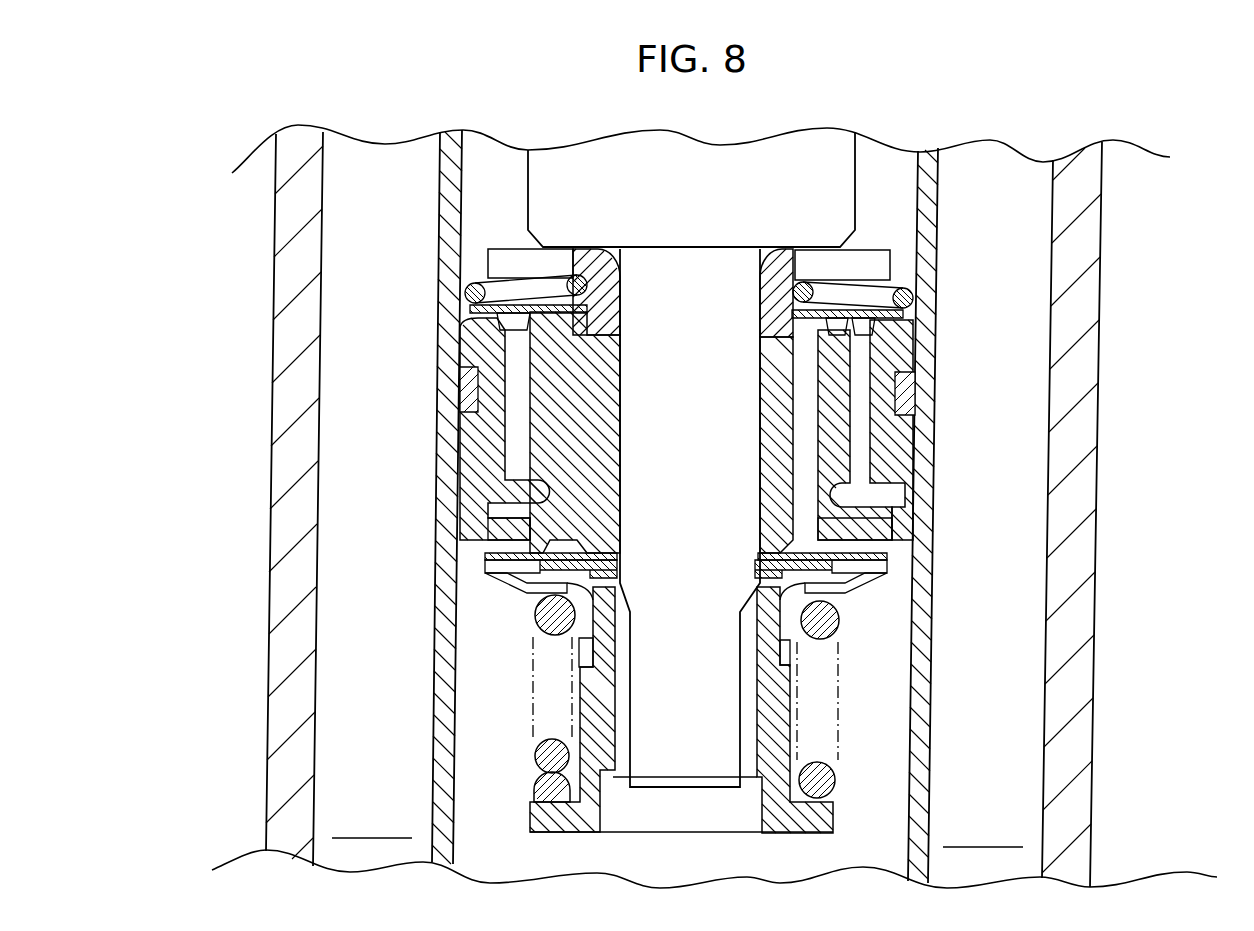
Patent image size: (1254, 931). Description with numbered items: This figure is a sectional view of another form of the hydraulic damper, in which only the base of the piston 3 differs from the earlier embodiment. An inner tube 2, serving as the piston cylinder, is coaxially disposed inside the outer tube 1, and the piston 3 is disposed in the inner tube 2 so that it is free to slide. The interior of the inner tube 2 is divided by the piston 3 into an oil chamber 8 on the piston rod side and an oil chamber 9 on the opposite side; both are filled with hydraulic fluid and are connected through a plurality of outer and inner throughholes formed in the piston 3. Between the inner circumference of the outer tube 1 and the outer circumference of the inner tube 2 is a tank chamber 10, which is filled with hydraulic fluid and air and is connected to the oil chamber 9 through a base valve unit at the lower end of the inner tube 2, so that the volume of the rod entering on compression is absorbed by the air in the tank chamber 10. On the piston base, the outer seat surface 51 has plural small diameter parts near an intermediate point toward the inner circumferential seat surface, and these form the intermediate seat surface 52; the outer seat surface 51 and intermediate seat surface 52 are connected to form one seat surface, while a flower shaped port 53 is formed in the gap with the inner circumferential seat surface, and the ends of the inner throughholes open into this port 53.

The outer tube 1 is at (1102, 332).
The inner tube 2 is at (938, 283).
The piston 3 is at (917, 457).
The oil chamber 8 is at (892, 217).
The oil chamber 9 is at (868, 737).
The tank chamber 10 is at (988, 425).
The outer seat surface 51 is at (880, 555).
The intermediate seat surface 52 is at (530, 547).
The port 53 is at (880, 520).